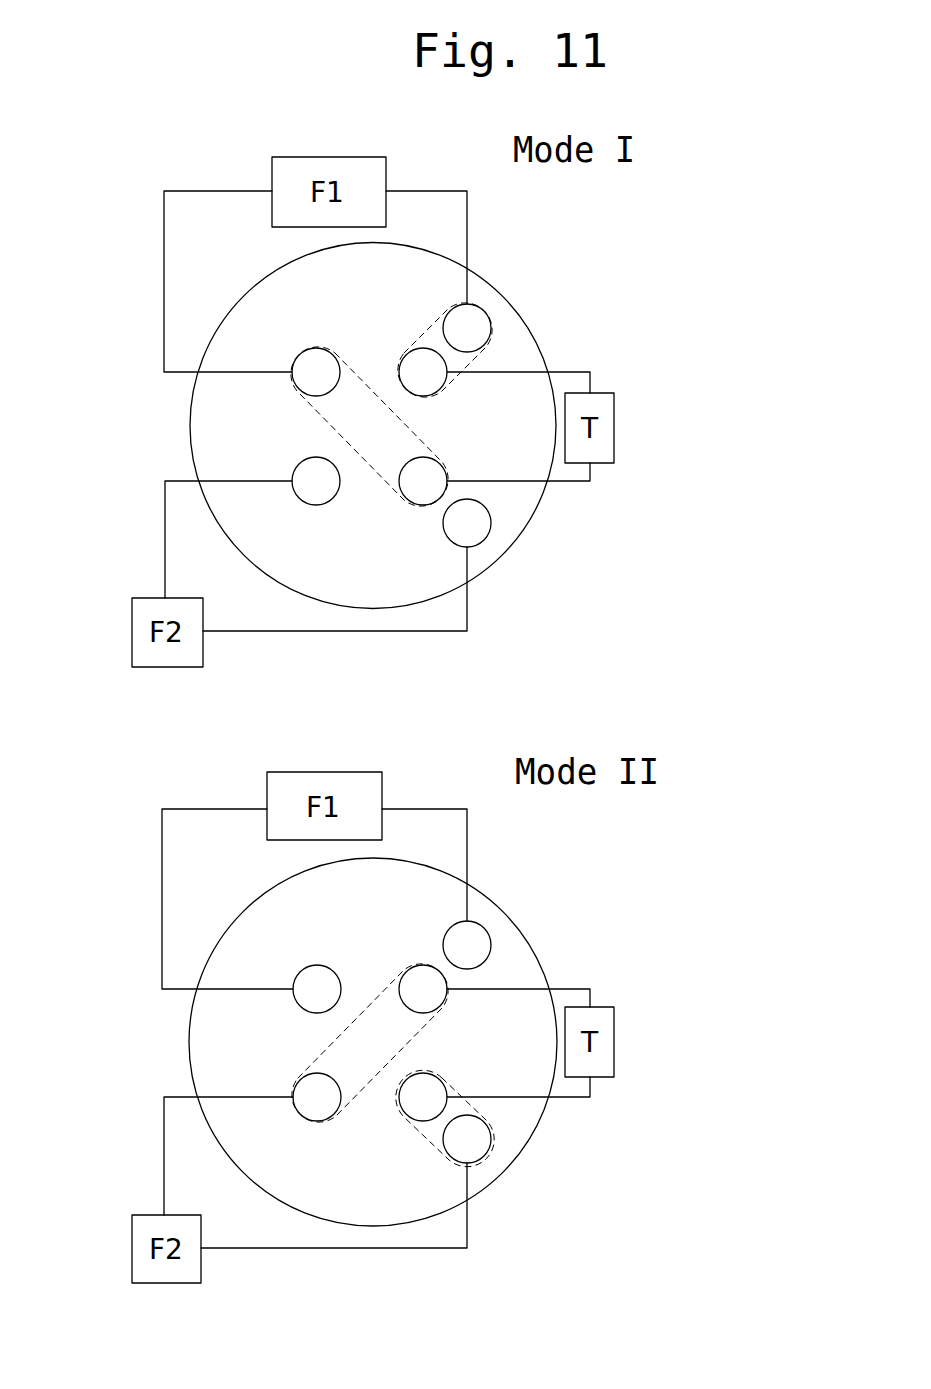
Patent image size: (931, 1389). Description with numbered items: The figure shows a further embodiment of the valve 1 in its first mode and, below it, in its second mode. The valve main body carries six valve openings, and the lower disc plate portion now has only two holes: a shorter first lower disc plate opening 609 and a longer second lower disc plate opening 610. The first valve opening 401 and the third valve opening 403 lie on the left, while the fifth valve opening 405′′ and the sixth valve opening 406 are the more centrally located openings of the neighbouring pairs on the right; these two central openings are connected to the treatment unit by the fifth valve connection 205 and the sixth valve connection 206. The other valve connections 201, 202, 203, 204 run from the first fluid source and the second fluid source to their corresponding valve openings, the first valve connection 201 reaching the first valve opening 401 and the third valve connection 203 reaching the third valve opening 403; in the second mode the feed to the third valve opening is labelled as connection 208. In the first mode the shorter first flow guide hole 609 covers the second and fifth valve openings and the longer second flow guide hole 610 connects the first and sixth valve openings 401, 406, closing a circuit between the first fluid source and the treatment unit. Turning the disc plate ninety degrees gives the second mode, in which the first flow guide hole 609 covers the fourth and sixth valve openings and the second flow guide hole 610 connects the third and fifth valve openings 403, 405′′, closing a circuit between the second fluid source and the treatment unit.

The valve 1 is at (683, 88).
The first valve connection 201 is at (192, 377).
The second valve connection 202 is at (603, 223).
The third valve connection 203 is at (165, 495).
The fourth valve connection 204 is at (590, 645).
The fifth valve connection 205 is at (647, 335).
The sixth valve connection 206 is at (667, 534).
The fluid line from pump F2 208 is at (195, 1097).
The first valve opening 401 is at (316, 348).
The third valve opening 403 is at (316, 505).
The fifth valve opening 405′′ is at (441, 391).
The sixth valve opening 406 is at (423, 505).
The first lower disc plate opening 609 is at (420, 327).
The second lower disc plate opening 610 is at (323, 427).